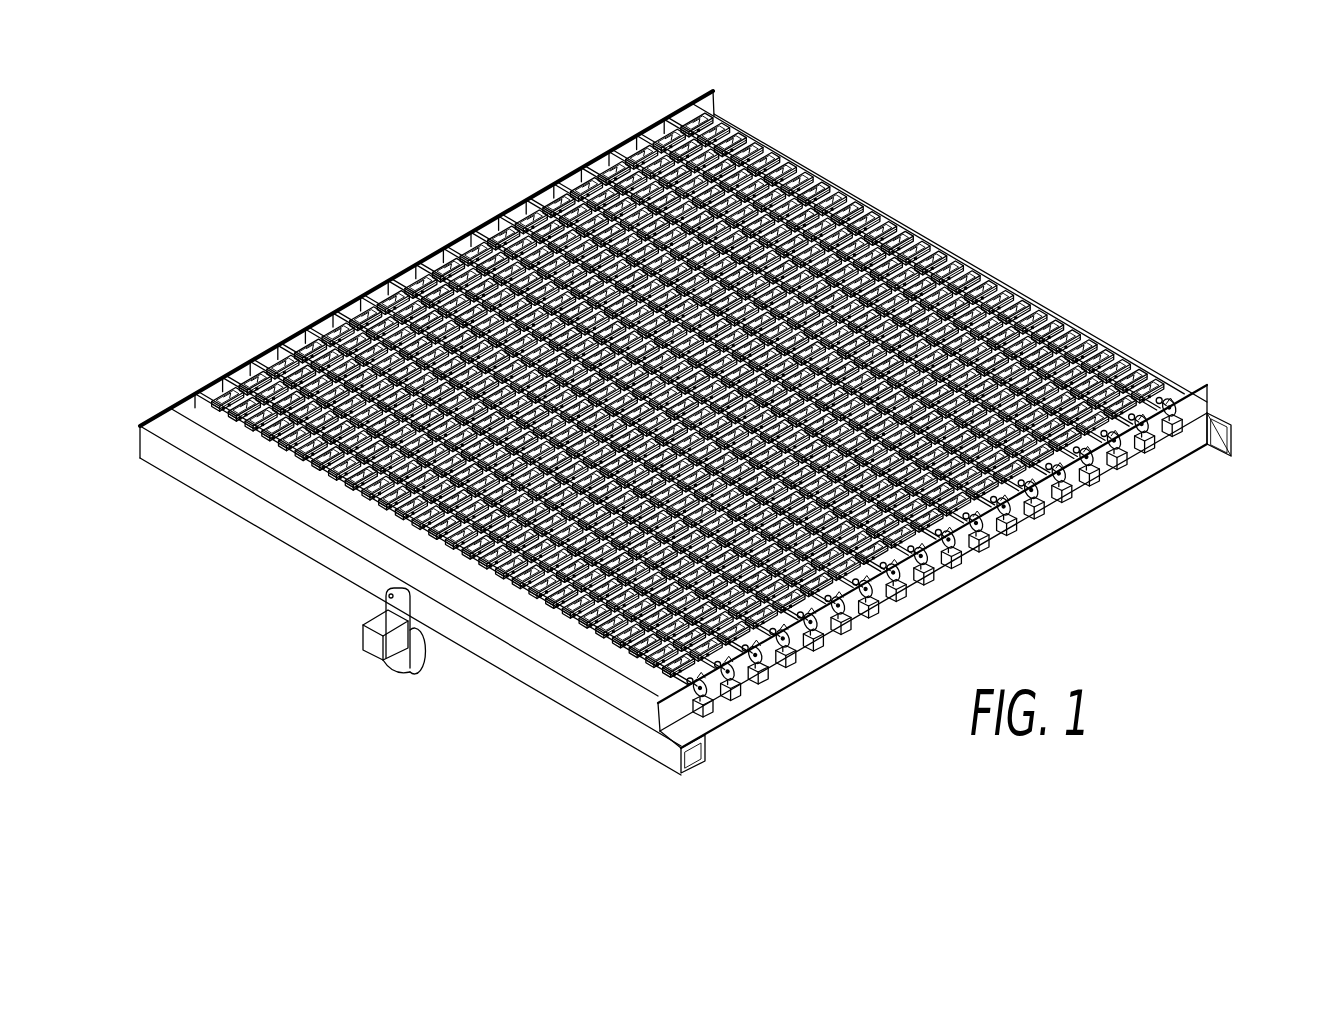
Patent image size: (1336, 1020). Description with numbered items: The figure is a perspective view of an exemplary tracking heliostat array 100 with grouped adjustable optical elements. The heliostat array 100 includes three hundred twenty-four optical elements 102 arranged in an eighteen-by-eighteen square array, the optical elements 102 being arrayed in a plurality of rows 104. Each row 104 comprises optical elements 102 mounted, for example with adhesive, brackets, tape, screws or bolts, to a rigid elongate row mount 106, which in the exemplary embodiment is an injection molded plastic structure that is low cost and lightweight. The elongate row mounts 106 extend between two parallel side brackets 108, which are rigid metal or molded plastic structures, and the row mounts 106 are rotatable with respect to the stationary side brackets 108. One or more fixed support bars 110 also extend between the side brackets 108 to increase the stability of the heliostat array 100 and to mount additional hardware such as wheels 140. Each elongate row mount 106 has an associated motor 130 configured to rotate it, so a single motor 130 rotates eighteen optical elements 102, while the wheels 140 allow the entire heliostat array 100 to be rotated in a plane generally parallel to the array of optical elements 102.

The heliostat array 100 is at (343, 130).
The optical elements 102 is at (815, 193).
The rows 104 is at (327, 295).
The elongate row mount 106 is at (605, 650).
The side brackets 108 is at (692, 103).
The fixed support bars 110 is at (985, 282).
The motor 130 is at (975, 553).
The wheels 140 is at (413, 648).